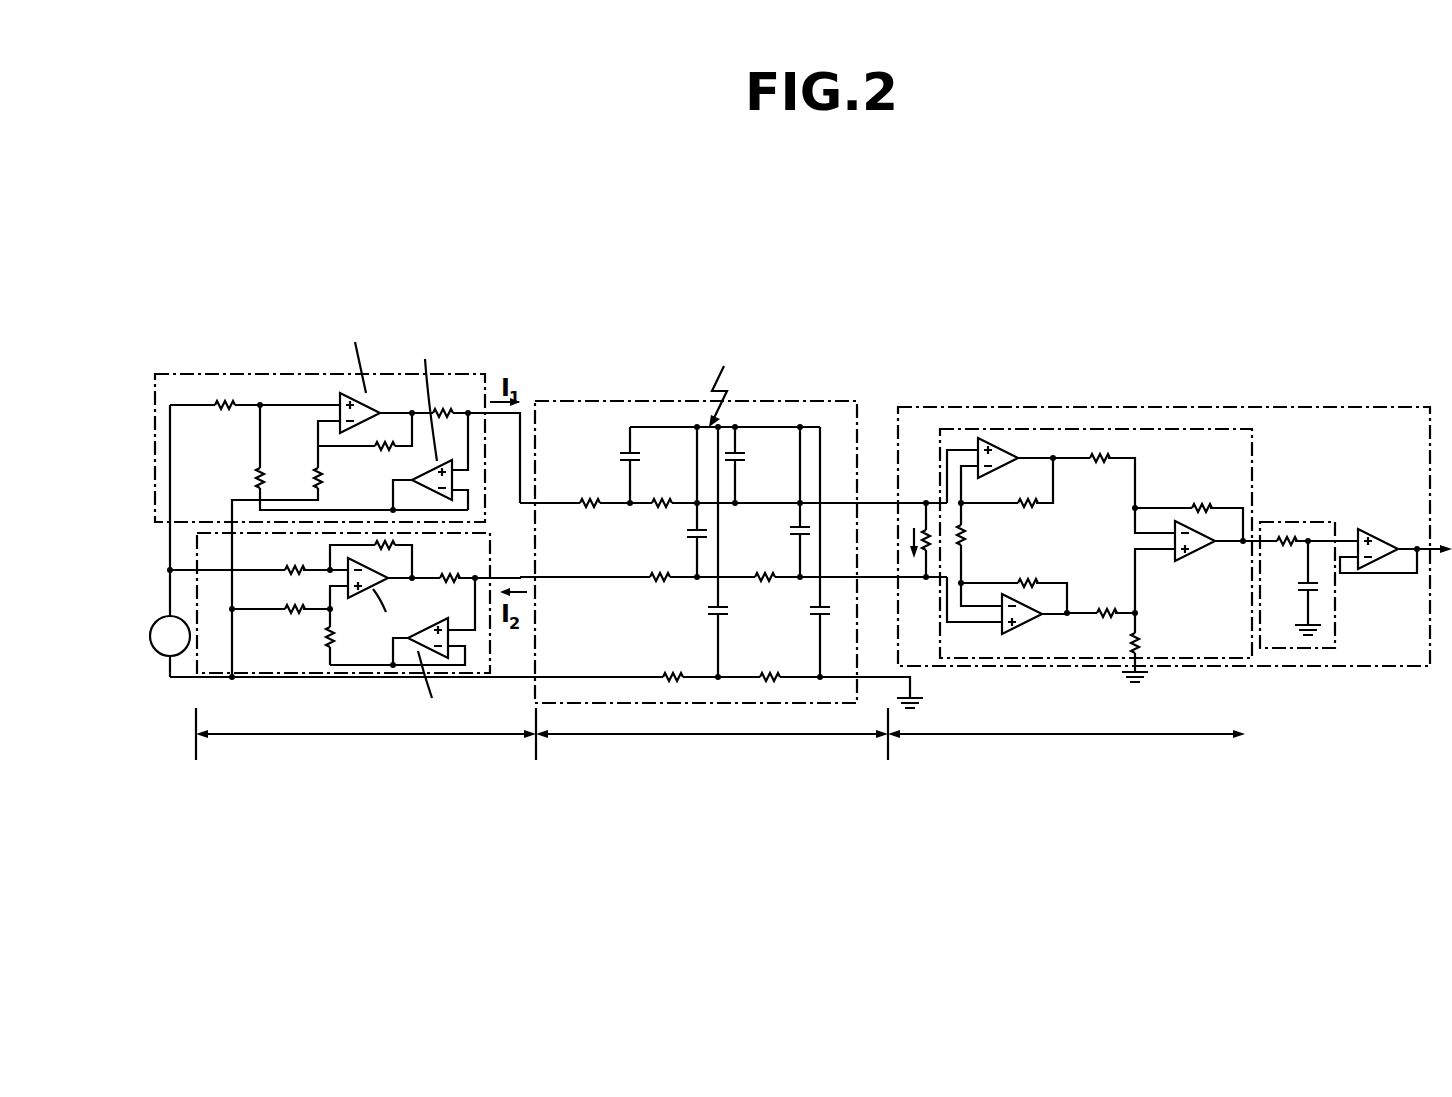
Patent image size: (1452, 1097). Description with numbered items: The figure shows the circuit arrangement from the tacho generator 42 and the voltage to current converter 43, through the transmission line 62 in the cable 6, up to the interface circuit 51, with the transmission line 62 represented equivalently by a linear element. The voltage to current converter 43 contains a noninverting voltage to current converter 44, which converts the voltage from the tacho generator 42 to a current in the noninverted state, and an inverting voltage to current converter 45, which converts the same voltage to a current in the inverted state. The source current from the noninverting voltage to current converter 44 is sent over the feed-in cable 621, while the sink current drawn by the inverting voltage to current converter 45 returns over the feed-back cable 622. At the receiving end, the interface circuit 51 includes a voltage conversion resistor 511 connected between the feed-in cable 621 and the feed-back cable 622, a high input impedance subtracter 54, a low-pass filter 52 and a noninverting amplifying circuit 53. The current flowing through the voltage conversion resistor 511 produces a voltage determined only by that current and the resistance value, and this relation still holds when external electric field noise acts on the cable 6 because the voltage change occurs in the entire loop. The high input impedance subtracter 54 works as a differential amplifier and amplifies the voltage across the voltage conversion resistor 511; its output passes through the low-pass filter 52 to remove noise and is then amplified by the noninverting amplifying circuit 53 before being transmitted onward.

The cable 6 is at (618, 705).
The tacho generator 42 is at (155, 654).
The voltage to current converter 43 is at (235, 313).
The noninverting voltage to current converter 44 is at (214, 372).
The inverting voltage to current converter 45 is at (196, 567).
The interface circuit 51 is at (1268, 406).
The voltage conversion resistor 511 is at (924, 537).
The low-pass filter 52 is at (1307, 520).
The noninverting amplifying circuit 53 is at (1383, 557).
The high input impedance subtracter 54 is at (1050, 430).
The transmission line 62 is at (632, 349).
The feed-in cable 621 is at (559, 575).
The feed-back cable 622 is at (553, 577).